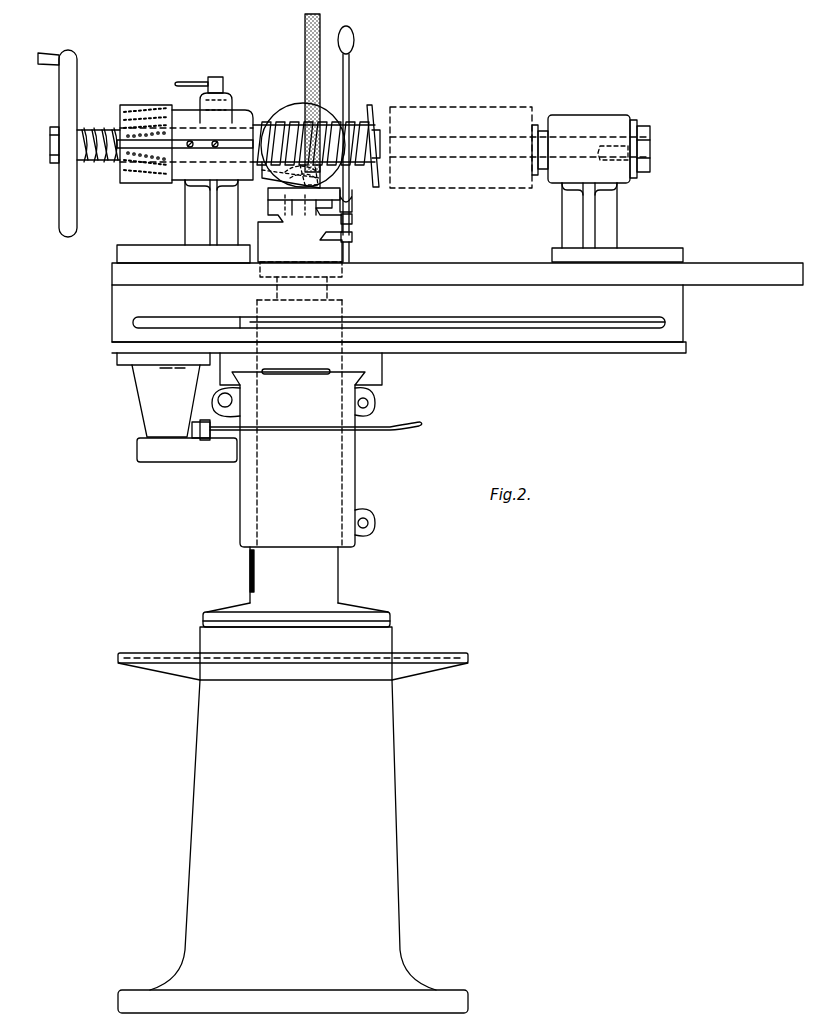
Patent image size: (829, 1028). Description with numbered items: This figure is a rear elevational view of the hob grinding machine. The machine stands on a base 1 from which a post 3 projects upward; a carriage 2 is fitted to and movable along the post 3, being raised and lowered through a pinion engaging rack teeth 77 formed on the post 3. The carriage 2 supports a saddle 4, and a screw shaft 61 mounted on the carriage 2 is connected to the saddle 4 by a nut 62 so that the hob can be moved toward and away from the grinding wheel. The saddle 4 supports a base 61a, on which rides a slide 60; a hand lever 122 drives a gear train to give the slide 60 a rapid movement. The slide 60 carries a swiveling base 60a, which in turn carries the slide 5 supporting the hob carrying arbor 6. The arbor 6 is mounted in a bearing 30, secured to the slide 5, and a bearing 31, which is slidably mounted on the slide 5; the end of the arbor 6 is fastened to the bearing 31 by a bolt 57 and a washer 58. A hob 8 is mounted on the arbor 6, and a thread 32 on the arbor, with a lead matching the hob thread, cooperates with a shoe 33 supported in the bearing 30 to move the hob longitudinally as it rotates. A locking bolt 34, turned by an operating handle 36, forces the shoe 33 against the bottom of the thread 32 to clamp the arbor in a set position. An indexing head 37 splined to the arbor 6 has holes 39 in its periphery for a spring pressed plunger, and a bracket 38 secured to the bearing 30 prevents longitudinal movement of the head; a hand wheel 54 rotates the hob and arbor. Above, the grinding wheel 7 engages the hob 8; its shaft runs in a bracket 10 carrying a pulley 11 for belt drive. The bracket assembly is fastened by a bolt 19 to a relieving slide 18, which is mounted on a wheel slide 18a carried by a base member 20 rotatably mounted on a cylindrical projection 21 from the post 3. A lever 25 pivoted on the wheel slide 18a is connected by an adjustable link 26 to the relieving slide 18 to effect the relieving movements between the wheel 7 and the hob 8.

The base 1 is at (394, 770).
The carriage 2 is at (356, 473).
The post or guide member 3 is at (340, 578).
The saddle 4 is at (383, 378).
The slide 5 is at (708, 263).
The hob carrying arbor 6 is at (300, 108).
The grinding wheel 7 is at (371, 106).
The hob 8 is at (426, 107).
The bracket 10 is at (265, 175).
The pulley 11 is at (322, 200).
The relieving slide 18 is at (353, 218).
The wheel slide 18a is at (353, 235).
The bolt 19 is at (268, 198).
The base member 20 is at (350, 250).
The cylindrical projection 21 is at (334, 298).
The lever 25 is at (354, 46).
The adjustable link 26 is at (353, 198).
The bearing 30 is at (238, 112).
The bearing 31 is at (598, 116).
The thread 32 is at (290, 122).
The shoe 33 is at (212, 134).
The locking bolt 34 is at (226, 94).
The operating handle 36 is at (192, 80).
The indexing head 37 is at (120, 112).
The bracket 38 is at (170, 150).
The holes 39 is at (145, 105).
The hand wheel 54 is at (72, 84).
The bolt 57 is at (651, 133).
The washer 58 is at (634, 122).
The slide 60 is at (684, 336).
The swiveling base 60a is at (684, 310).
The screw shaft 61 is at (232, 400).
The base 61a is at (687, 352).
The nut 62 is at (232, 418).
The rack teeth 77 is at (250, 570).
The hand lever 122 is at (410, 433).